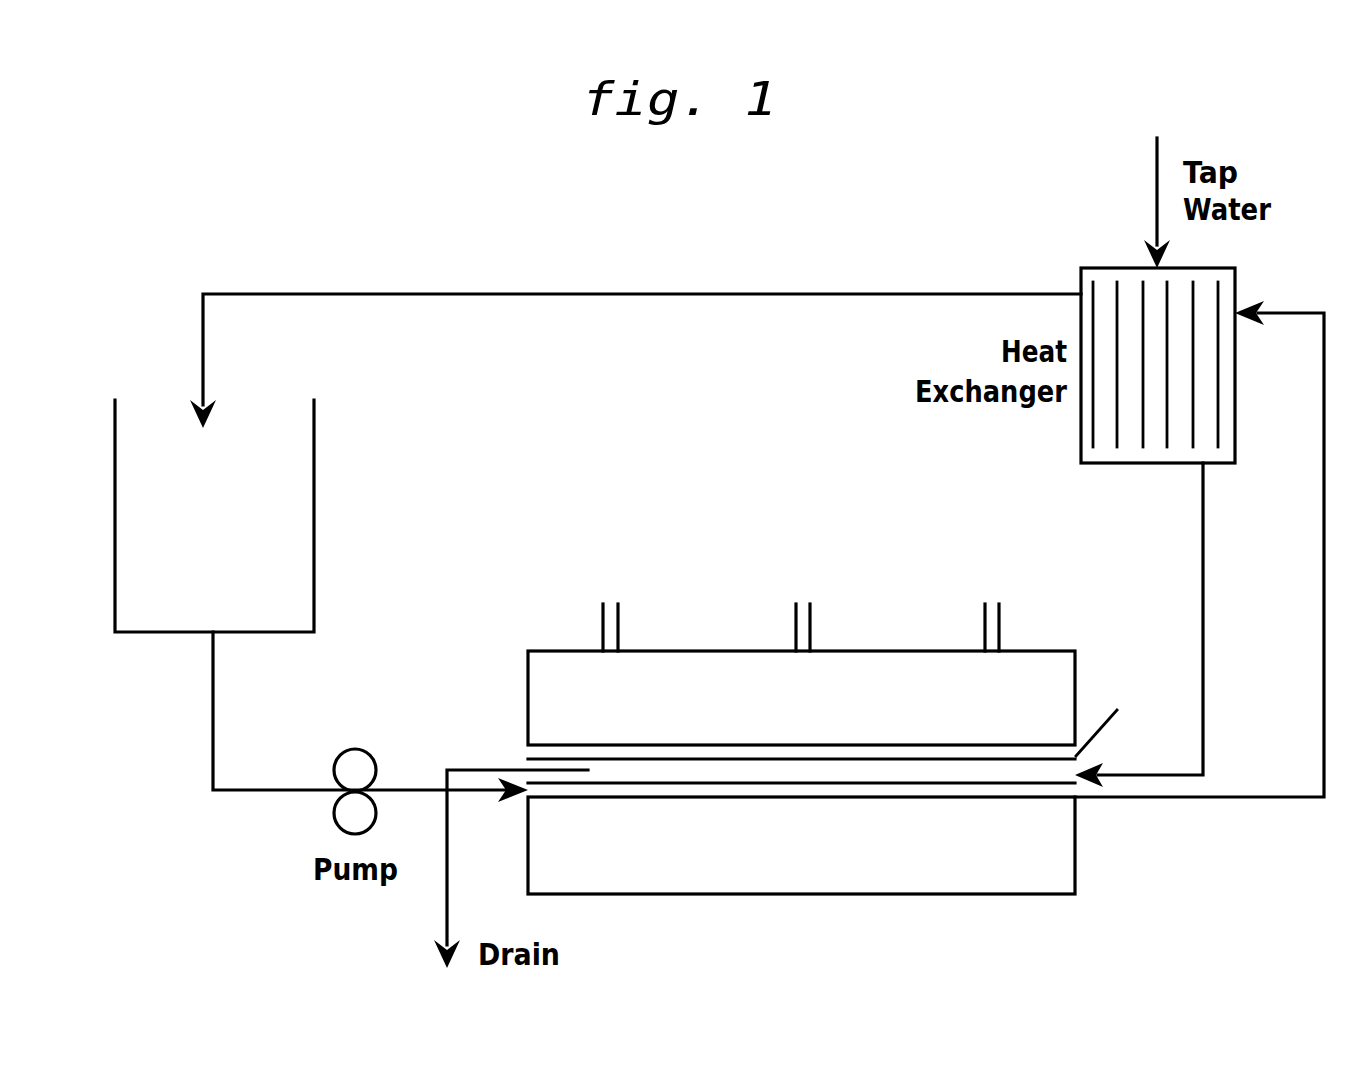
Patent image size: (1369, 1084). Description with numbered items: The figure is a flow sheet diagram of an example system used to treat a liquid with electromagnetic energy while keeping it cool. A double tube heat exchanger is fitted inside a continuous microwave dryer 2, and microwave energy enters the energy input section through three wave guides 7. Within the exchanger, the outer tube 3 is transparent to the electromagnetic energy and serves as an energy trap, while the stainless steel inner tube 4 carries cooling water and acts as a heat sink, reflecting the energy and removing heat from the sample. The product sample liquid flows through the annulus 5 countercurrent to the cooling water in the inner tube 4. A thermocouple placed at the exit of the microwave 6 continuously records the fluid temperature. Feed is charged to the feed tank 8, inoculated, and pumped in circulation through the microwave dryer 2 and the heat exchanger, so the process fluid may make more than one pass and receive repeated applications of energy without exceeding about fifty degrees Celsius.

The continuous microwave dryer 2 is at (799, 788).
The outer tube 3 is at (1090, 686).
The inner tube 4 is at (514, 751).
The annulus 5 is at (526, 800).
The exit of the microwave 6 is at (1128, 709).
The wave guides 7 is at (801, 599).
The feed tank 8 is at (263, 516).